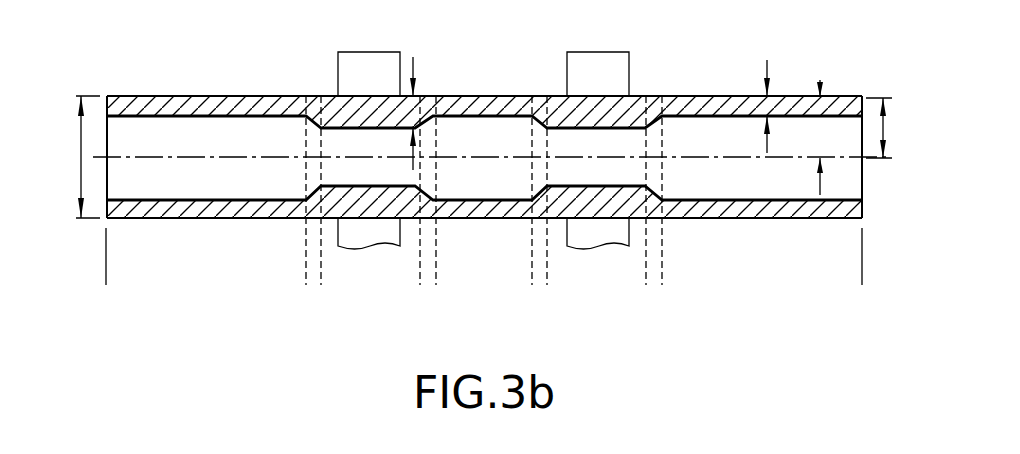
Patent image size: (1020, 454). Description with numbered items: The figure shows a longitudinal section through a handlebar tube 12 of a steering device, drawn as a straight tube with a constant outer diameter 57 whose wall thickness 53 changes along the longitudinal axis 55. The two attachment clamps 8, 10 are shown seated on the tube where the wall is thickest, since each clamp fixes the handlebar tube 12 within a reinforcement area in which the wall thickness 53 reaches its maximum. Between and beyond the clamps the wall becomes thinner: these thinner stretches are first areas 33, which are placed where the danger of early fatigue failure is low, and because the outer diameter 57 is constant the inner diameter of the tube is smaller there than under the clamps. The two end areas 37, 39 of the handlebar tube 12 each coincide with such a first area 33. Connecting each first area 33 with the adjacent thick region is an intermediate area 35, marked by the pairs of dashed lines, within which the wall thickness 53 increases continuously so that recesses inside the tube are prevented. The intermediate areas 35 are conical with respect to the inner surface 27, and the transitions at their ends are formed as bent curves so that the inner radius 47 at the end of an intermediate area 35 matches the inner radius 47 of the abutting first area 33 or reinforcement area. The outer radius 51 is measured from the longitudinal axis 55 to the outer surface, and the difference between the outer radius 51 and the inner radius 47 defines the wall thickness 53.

The attachment clamp 8 is at (353, 67).
The attachment clamp 10 is at (608, 58).
The handlebar tube 12 is at (509, 100).
The inner surface 27 is at (172, 116).
The first area 33 is at (230, 238).
The intermediate area 35 is at (312, 289).
The end area 37 is at (211, 96).
The end area 39 is at (808, 96).
The inner radius 47 is at (820, 118).
The outer radius 51 is at (884, 126).
The wall thickness 53 is at (414, 103).
The longitudinal axis 55 is at (868, 158).
The outer diameter 57 is at (80, 136).